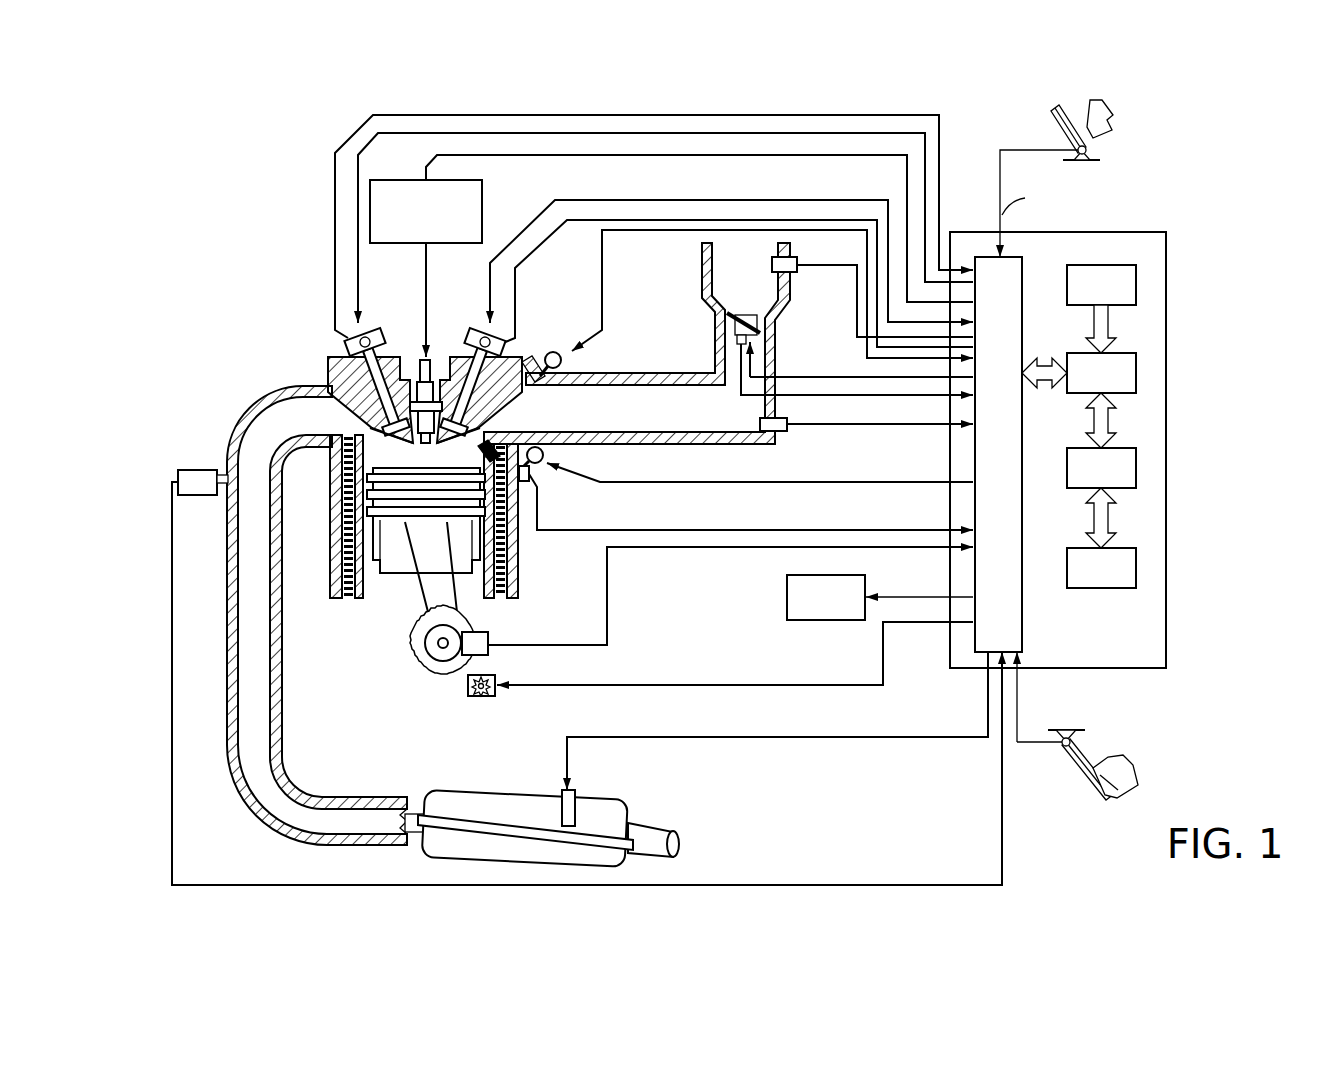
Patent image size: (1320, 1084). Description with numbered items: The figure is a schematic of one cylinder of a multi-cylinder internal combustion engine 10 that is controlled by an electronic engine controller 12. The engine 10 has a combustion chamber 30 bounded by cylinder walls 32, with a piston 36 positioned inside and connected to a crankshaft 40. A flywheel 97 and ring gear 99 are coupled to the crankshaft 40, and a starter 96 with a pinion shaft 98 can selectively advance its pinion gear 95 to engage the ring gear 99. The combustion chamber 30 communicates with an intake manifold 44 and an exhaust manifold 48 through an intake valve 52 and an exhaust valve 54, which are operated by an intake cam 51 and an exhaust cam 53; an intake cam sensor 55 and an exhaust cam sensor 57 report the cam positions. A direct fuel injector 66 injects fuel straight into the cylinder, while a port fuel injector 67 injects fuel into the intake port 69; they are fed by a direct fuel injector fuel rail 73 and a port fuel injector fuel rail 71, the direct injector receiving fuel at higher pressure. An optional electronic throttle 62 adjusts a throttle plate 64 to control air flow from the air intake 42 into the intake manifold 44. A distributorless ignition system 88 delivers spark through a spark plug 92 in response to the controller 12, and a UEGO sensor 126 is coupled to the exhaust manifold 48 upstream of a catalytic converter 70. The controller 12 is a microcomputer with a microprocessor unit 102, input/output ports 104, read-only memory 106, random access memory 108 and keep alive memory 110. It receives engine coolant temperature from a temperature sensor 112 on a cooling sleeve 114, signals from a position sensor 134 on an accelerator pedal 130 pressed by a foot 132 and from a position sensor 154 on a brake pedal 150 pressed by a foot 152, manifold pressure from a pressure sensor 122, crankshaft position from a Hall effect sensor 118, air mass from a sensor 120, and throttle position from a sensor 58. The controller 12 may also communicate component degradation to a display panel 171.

The internal combustion engine 10 is at (268, 316).
The electronic engine controller 12 is at (1162, 233).
The combustion chamber 30 is at (335, 553).
The cylinder walls 32 is at (370, 594).
The piston 36 is at (406, 575).
The crankshaft 40 is at (421, 673).
The air intake 42 is at (731, 290).
The intake manifold 44 is at (670, 420).
The exhaust manifold 48 is at (283, 425).
The intake cam 51 is at (478, 332).
The intake valve 52 is at (480, 418).
The exhaust cam 53 is at (372, 332).
The exhaust valve 54 is at (385, 415).
The intake cam sensor 55 is at (500, 348).
The exhaust cam sensor 57 is at (350, 345).
The throttle position sensor 58 is at (735, 342).
The electronic throttle 62 is at (760, 318).
The throttle plate 64 is at (727, 318).
The direct fuel injector 66 is at (528, 465).
The port fuel injector 67 is at (533, 360).
The intake port 69 is at (545, 420).
The catalytic converter 70 is at (435, 792).
The port fuel injector fuel rail 71 is at (575, 368).
The direct fuel injector fuel rail 73 is at (545, 456).
The distributorless ignition system 88 is at (388, 180).
The spark plug 92 is at (430, 365).
The pinion gear 95 is at (480, 702).
The starter 96 is at (488, 698).
The flywheel 97 is at (417, 657).
The pinion shaft 98 is at (467, 698).
The ring gear 99 is at (437, 681).
The microprocessor unit 102 is at (1137, 375).
The input/output ports 104 is at (1023, 263).
The read-only memory 106 is at (1137, 282).
The random access memory 108 is at (1137, 470).
The keep alive memory 110 is at (1137, 572).
The temperature sensor 112 is at (530, 480).
The cooling sleeve 114 is at (512, 555).
The Hall effect sensor 118 is at (489, 638).
The air mass sensor 120 is at (790, 273).
The pressure sensor 122 is at (785, 436).
The Universal Exhaust Gas Oxygen sensor 126 is at (178, 472).
The accelerator pedal 130 is at (1063, 120).
The foot 132 is at (1113, 112).
The position sensor 134 is at (1100, 157).
The brake pedal 150 is at (1090, 785).
The foot 152 is at (1125, 753).
The position sensor 154 is at (1054, 737).
The display panel 171 is at (880, 597).